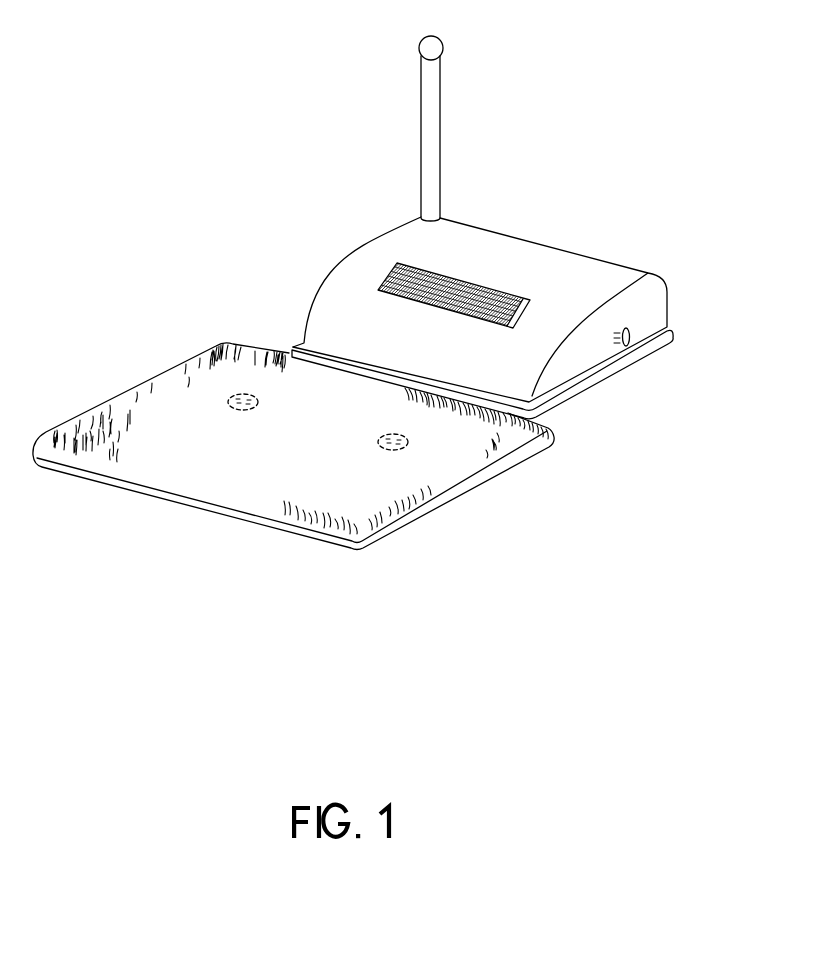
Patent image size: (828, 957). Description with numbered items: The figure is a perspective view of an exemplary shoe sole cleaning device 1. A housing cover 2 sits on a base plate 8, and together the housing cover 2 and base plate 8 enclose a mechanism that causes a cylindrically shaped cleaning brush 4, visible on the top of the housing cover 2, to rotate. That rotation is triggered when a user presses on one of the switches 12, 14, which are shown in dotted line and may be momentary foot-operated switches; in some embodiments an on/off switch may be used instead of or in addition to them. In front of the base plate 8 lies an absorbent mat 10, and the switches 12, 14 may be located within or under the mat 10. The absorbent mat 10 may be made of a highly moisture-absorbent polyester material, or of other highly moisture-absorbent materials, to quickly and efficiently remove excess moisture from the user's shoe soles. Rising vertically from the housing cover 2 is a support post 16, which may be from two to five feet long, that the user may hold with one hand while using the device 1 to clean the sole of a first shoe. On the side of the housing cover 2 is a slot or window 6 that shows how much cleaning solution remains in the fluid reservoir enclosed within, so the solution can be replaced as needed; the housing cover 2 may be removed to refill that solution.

The shoe sole cleaning device 1 is at (157, 63).
The housing cover 2 is at (387, 200).
The cleaning brush 4 is at (468, 283).
The slot or window 6 is at (630, 338).
The base plate 8 is at (665, 338).
The absorbent mat 10 is at (513, 447).
The switch 12 is at (241, 393).
The switch 14 is at (410, 443).
The support post 16 is at (463, 58).